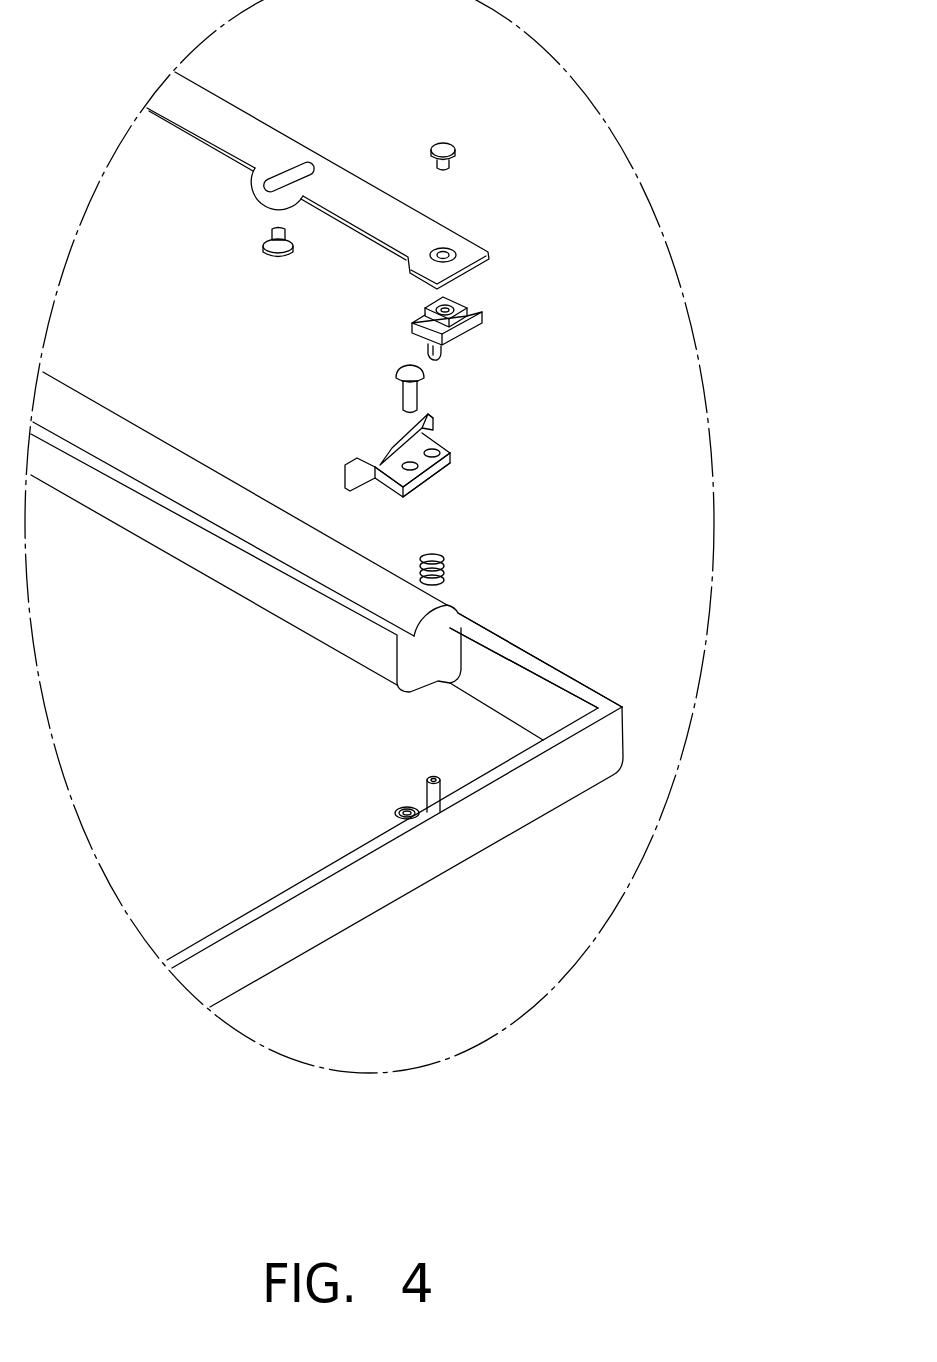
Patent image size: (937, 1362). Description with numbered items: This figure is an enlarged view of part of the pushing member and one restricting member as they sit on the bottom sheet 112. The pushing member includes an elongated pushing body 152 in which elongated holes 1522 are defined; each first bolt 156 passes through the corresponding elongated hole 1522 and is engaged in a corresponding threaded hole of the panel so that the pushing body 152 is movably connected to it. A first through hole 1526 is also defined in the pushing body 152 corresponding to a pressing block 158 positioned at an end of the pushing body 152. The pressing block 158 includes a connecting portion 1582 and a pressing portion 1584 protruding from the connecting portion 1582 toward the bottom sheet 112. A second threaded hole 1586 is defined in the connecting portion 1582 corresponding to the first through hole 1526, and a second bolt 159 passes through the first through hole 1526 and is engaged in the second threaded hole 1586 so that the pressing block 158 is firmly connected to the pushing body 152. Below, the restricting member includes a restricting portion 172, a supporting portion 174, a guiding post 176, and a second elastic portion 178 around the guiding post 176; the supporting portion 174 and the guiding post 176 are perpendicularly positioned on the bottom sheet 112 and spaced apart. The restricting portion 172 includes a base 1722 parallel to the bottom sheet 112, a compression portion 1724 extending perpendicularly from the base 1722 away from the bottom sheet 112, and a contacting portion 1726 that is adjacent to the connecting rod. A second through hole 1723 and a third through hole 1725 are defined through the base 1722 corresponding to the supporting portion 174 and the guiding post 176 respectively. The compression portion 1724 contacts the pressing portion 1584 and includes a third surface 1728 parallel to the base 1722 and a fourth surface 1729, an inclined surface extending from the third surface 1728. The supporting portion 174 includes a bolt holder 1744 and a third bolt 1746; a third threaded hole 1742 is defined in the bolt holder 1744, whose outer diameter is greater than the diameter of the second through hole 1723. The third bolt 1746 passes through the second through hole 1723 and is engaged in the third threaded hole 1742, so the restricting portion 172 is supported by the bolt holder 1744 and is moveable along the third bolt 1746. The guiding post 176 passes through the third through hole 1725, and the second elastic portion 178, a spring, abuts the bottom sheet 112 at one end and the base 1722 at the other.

The bottom sheet 112 is at (465, 737).
The pushing body 152 is at (200, 118).
The elongated hole 1522 is at (300, 177).
The first through hole 1526 is at (448, 250).
The first bolt 156 is at (278, 240).
The pressing block 158 is at (603, 325).
The connecting portion 1582 is at (470, 330).
The pressing portion 1584 is at (438, 358).
The second threaded hole 1586 is at (447, 312).
The second bolt 159 is at (447, 148).
The restricting portion 172 is at (250, 385).
The base 1722 is at (412, 432).
The second through hole 1723 is at (411, 469).
The compression portion 1724 is at (430, 420).
The third through hole 1725 is at (433, 456).
The contacting portion 1726 is at (360, 475).
The third surface 1728 is at (436, 415).
The fourth surface 1729 is at (420, 438).
The supporting portion 174 is at (397, 810).
The third threaded hole 1742 is at (412, 816).
The bolt holder 1744 is at (392, 823).
The third bolt 1746 is at (410, 375).
The guiding post 176 is at (517, 725).
The second elastic portion 178 is at (440, 570).